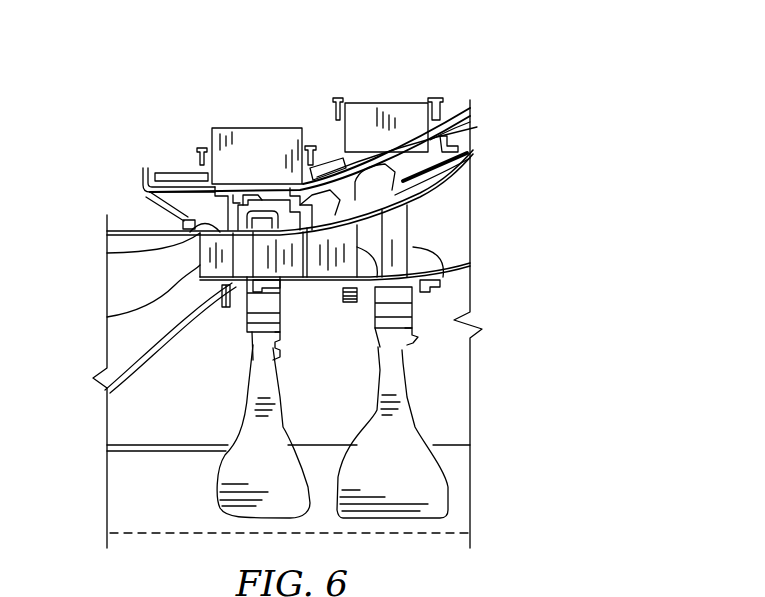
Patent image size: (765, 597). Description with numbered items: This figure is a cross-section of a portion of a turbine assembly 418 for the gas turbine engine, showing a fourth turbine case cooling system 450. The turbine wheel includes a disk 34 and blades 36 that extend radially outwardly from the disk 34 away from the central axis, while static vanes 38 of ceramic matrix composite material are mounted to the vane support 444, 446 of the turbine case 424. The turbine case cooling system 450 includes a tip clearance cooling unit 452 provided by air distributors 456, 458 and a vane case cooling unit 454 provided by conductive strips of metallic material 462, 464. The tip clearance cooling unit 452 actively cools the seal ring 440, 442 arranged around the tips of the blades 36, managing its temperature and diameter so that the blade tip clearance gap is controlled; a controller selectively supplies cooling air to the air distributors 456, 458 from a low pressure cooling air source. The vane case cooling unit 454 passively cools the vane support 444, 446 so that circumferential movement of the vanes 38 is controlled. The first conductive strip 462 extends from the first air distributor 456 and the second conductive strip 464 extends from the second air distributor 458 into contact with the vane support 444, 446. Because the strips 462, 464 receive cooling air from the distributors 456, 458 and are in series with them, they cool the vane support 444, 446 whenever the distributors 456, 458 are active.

The turbine assembly 418 is at (137, 165).
The turbine case 424 is at (139, 191).
The disk 34 is at (282, 423).
The blades 36 is at (225, 293).
The static vanes 38 is at (164, 285).
The seal ring 440 is at (265, 195).
The seal ring 442 is at (462, 132).
The vane support 444 is at (107, 253).
The vane support 446 is at (300, 231).
The turbine case cooling system 450 is at (443, 103).
The tip clearance cooling unit 452 is at (320, 102).
The vane case cooling unit 454 is at (180, 110).
The tip clearance cooling air distributor 456 is at (247, 128).
The tip clearance cooling air distributor 458 is at (363, 103).
The conductive strip of metallic material 462 is at (185, 173).
The conductive strip of metallic material 464 is at (327, 163).